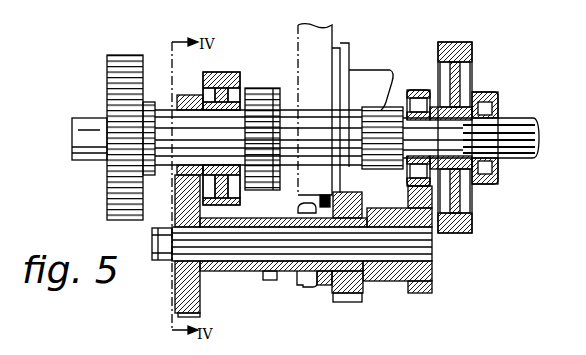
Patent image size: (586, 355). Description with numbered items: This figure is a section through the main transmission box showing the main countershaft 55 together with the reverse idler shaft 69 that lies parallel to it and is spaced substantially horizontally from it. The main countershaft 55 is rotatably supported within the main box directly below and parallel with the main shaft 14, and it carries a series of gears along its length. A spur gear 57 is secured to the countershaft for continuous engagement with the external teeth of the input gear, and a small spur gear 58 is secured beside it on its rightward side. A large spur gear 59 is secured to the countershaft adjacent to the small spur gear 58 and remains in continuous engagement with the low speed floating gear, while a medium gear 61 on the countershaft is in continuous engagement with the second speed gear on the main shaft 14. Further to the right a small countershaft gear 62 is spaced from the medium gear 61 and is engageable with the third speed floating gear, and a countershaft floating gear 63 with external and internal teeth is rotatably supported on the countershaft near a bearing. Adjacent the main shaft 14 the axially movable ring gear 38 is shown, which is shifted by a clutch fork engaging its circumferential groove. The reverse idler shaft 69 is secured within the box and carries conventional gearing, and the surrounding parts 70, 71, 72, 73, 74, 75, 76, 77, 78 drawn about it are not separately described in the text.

The main countershaft 55 is at (78, 125).
The spur gear 57 is at (113, 187).
The small spur gear 58 is at (187, 95).
The large spur gear 59 is at (222, 82).
The medium gear 61 is at (260, 90).
The ring gear 38 is at (308, 42).
The main shaft 14 is at (362, 82).
The small countershaft gear 62 is at (396, 107).
The countershaft floating gear 63 is at (473, 95).
The detent 76 is at (320, 200).
The nut 71 is at (162, 263).
The end wall 72 is at (185, 302).
The housing wall 70 is at (212, 272).
The reverse idler shaft 69 is at (242, 248).
The bracket 73 is at (270, 281).
The lug 77 is at (303, 286).
The pin 75 is at (323, 285).
The block 78 is at (348, 298).
The housing 74 is at (372, 294).